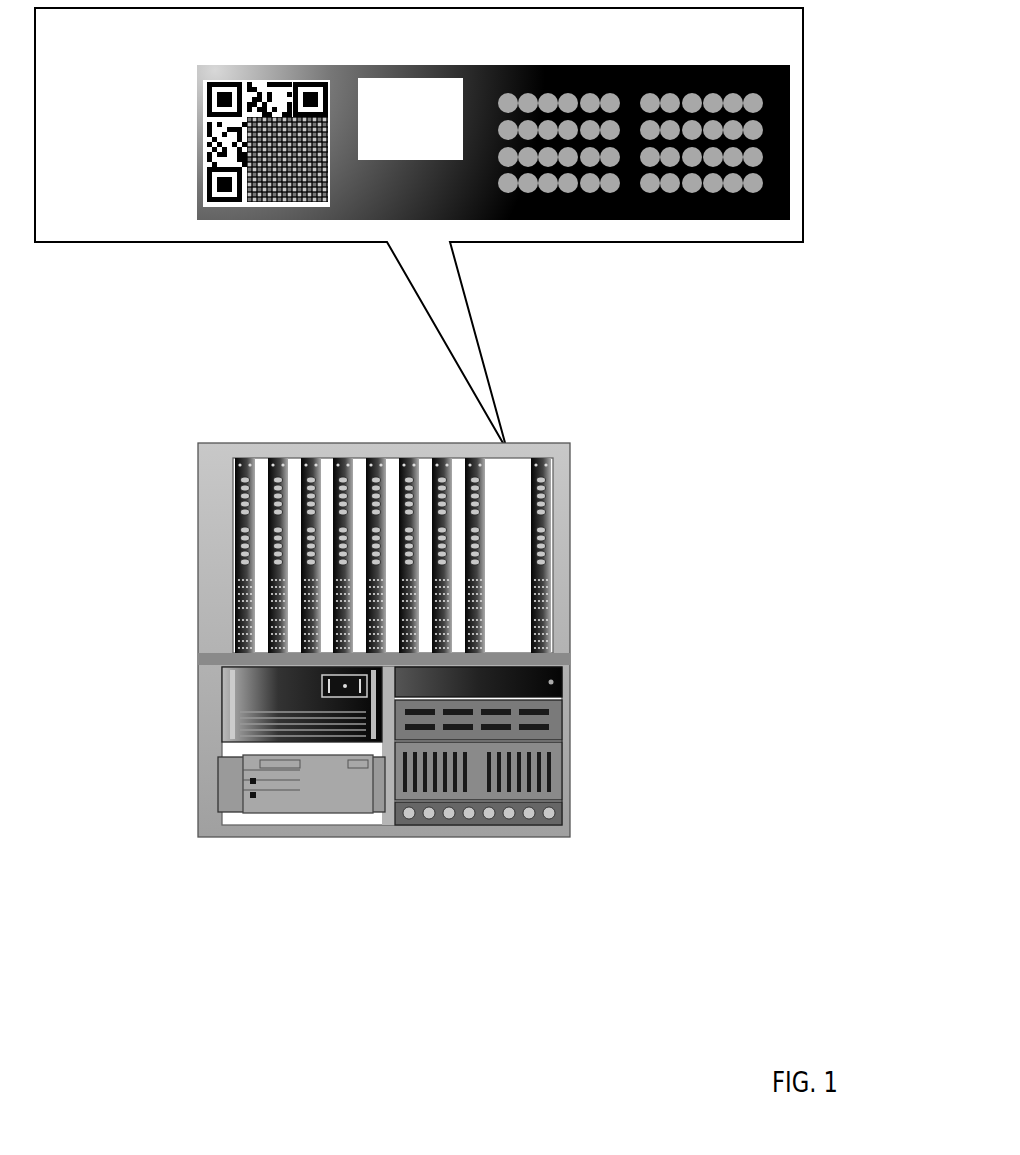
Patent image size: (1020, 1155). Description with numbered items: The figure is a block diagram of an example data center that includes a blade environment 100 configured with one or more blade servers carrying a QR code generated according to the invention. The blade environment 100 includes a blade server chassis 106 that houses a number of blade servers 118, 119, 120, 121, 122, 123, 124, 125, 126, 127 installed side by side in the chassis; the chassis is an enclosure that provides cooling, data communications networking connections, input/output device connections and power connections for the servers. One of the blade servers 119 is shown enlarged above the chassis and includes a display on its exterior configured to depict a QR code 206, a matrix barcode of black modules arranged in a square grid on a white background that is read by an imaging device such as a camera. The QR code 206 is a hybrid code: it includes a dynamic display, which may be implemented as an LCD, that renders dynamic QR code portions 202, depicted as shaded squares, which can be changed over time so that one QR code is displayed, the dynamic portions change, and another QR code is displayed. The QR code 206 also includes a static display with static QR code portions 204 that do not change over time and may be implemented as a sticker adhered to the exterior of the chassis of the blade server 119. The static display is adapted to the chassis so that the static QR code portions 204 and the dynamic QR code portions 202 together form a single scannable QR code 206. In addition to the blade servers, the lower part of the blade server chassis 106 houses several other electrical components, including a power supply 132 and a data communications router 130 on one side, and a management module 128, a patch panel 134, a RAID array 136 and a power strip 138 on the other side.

The blade environment 100 is at (414, 672).
The blade server chassis 106 is at (198, 485).
The blade server 118 is at (541, 452).
The blade server 119 is at (508, 452).
The blade server 120 is at (475, 452).
The blade server 121 is at (442, 452).
The blade server 122 is at (409, 452).
The blade server 123 is at (376, 452).
The blade server 124 is at (343, 452).
The blade server 125 is at (311, 452).
The blade server 126 is at (278, 452).
The blade server 127 is at (245, 452).
The management module 128 is at (574, 684).
The data communications router 130 is at (196, 792).
The power supply 132 is at (196, 698).
The patch panel 134 is at (574, 725).
The RAID array 136 is at (574, 774).
The power strip 138 is at (574, 813).
The dynamic QR code portions 202 is at (311, 145).
The static QR code portions 204 is at (200, 142).
The QR code 206 is at (268, 116).